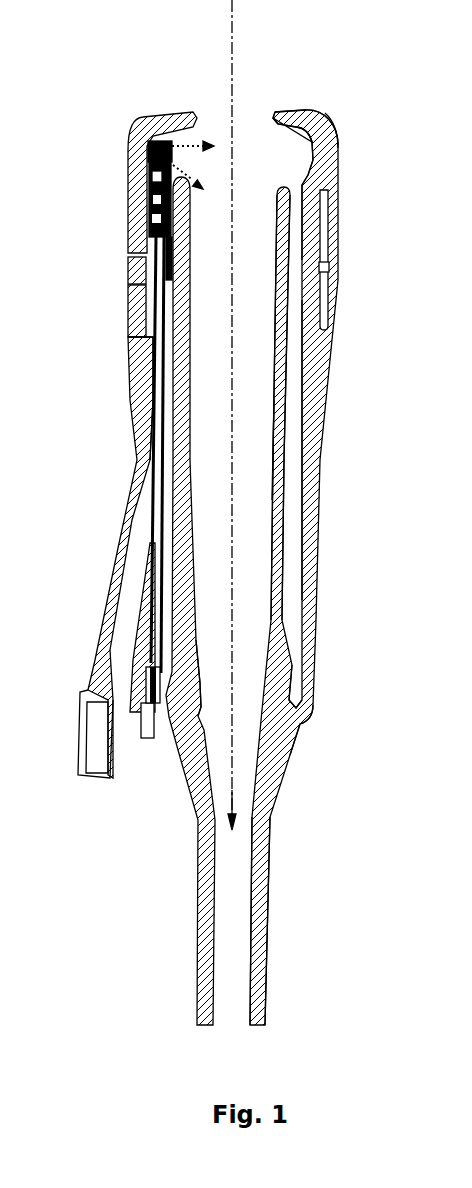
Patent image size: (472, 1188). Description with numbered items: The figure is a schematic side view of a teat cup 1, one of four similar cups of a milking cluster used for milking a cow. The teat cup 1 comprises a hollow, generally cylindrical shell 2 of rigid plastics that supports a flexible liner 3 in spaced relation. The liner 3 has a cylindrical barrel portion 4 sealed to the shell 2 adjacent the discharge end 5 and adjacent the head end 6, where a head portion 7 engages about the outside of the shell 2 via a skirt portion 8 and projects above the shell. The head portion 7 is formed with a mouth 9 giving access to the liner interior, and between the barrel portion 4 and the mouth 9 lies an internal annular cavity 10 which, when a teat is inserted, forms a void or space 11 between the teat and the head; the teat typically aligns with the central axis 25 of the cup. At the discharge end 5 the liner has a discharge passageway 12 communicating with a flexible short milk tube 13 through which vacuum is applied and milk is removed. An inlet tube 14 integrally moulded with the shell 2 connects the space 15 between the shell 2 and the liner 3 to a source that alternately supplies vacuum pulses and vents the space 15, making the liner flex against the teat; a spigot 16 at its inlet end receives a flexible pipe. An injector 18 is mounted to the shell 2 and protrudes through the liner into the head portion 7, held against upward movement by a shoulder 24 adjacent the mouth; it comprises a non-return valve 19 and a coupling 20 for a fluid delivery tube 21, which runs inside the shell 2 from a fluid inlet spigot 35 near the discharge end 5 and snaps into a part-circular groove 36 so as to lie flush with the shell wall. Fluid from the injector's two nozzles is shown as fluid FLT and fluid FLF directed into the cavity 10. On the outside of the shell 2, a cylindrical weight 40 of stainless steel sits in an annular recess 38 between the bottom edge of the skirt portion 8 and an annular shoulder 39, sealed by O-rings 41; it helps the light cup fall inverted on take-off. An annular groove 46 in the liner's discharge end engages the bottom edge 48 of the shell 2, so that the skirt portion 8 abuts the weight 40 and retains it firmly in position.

The teat cup 1 is at (118, 420).
The shell 2 is at (320, 393).
The liner 3 is at (276, 340).
The barrel portion 4 is at (275, 442).
The discharge end 5 is at (307, 745).
The head end 6 is at (327, 109).
The head portion 7 is at (331, 138).
The skirt portion 8 is at (334, 224).
The mouth 9 is at (276, 116).
The internal annular cavity 10 is at (311, 142).
The void or space 11 is at (283, 170).
The discharge passageway 12 is at (239, 796).
The short milk tube 13 is at (262, 870).
The inlet tube 14 is at (118, 548).
The space 15 is at (293, 431).
The spigot 16 is at (80, 740).
The injector 18 is at (150, 147).
The non-return valve 19 is at (117, 184).
The coupling 20 is at (166, 228).
The fluid delivery tube 21 is at (113, 455).
The shoulder 24 is at (141, 117).
The central axis 25 is at (196, 407).
The fluid inlet spigot 35 is at (153, 740).
The part-circular groove 36 is at (109, 514).
The annular recess 38 is at (108, 267).
The annular shoulder 39 is at (107, 310).
The cylindrical weight 40 is at (328, 294).
The O-rings 41 is at (330, 268).
The annular groove 46 is at (200, 700).
The bottom edge 48 is at (312, 703).
The fluid FLT is at (188, 100).
The fluid FLF is at (205, 184).